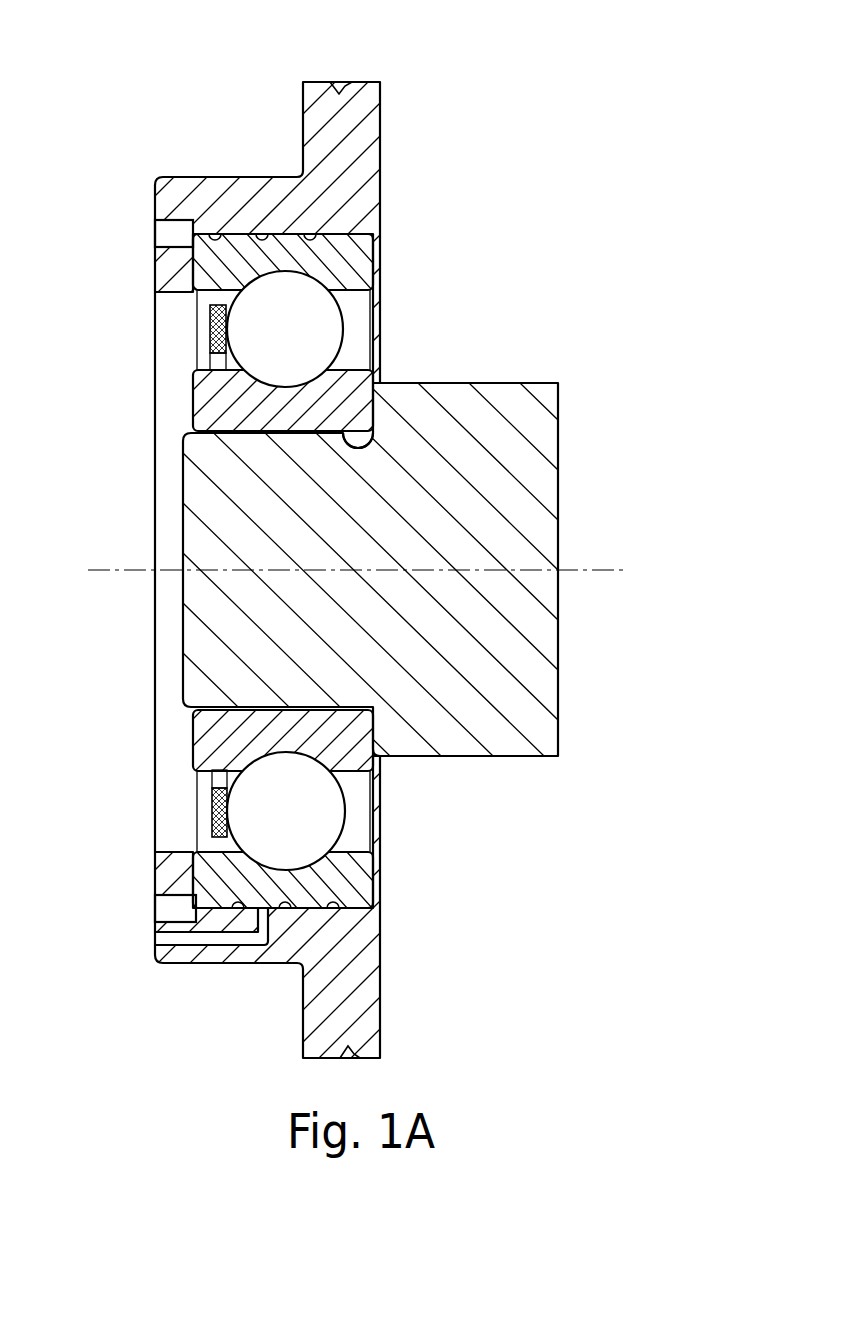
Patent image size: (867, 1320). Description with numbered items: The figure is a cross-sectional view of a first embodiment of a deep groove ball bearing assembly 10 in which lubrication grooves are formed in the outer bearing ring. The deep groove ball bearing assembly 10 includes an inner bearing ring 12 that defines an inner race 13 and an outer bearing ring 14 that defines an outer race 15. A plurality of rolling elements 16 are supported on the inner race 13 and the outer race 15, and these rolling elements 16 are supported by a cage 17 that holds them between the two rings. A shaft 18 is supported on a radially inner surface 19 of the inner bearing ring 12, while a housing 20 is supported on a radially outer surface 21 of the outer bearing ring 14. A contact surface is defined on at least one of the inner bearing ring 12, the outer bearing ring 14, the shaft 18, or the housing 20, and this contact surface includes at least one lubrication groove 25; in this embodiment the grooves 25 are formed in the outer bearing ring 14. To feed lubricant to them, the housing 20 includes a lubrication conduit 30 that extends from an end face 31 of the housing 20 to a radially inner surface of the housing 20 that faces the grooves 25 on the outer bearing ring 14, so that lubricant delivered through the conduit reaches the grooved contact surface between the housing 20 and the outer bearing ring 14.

The deep groove ball bearing assembly 10 is at (448, 201).
The inner bearing ring 12 is at (213, 735).
The inner race 13 is at (270, 388).
The outer bearing ring 14 is at (343, 878).
The outer race 15 is at (297, 262).
The rolling elements 16 is at (322, 312).
The cage 17 is at (215, 808).
The shaft 18 is at (531, 483).
The radially inner surface 19 is at (366, 438).
The housing 20 is at (200, 193).
The radially outer surface 21 is at (250, 233).
The lubrication groove 25 is at (238, 910).
The lubrication conduit 30 is at (155, 940).
The end face 31 is at (152, 204).